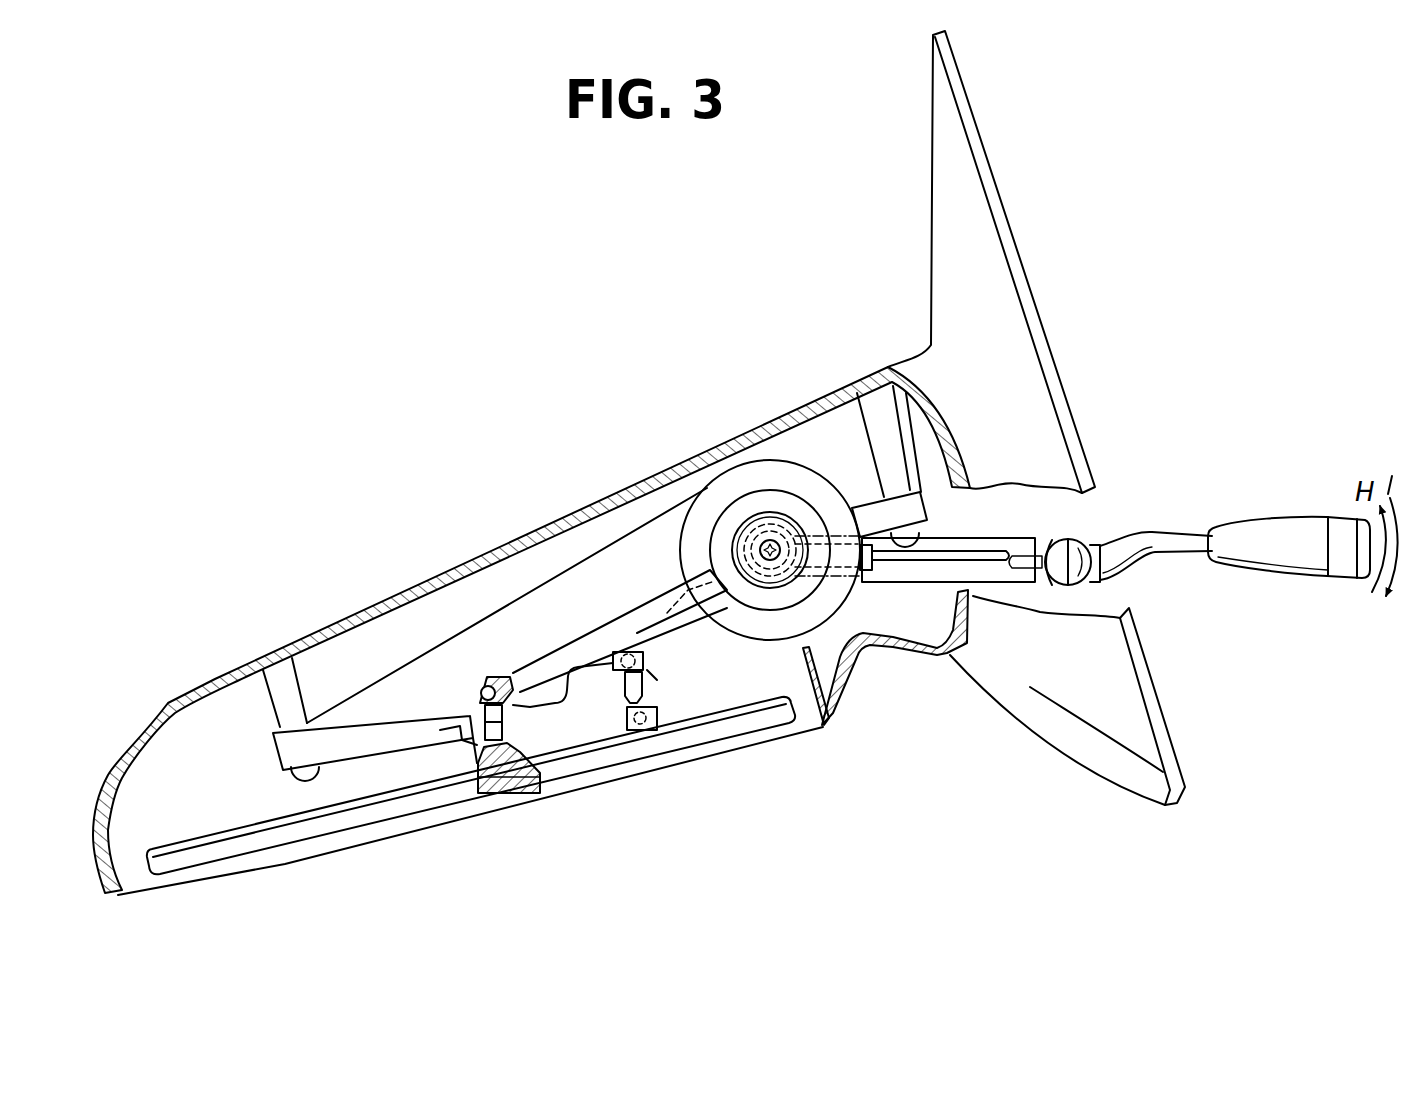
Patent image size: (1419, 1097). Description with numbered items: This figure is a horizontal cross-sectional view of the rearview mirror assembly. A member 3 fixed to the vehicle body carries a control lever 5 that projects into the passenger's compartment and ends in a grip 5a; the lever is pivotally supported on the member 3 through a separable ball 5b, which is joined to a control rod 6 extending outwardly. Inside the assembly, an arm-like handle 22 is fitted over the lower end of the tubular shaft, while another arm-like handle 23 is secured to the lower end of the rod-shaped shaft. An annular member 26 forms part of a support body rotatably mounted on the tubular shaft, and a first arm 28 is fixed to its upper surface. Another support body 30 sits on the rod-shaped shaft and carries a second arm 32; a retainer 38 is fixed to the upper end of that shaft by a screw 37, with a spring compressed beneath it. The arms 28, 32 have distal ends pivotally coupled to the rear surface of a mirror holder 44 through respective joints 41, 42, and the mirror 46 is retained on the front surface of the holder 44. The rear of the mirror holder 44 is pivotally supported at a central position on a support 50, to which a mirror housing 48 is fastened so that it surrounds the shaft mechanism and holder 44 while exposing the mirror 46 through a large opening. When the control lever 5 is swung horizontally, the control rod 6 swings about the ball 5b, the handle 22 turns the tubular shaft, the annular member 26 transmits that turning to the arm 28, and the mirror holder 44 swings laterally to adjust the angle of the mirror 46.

The member fixed to vehicle body 3 is at (1076, 428).
The control lever 5 is at (1183, 532).
The grip 5a is at (1277, 563).
The ball 5b is at (1075, 532).
The control rod 6 is at (983, 557).
The arm-like handle 22 is at (860, 640).
The arm-like handle 23 is at (923, 580).
The annular member 26 is at (757, 462).
The first arm 28 is at (690, 622).
The support body 30 is at (727, 506).
The second arm 32 is at (588, 633).
The screw 37 is at (772, 560).
The retainer 38 is at (779, 514).
The joint 41 is at (650, 705).
The joint 42 is at (475, 712).
The mirror holder 44 is at (610, 754).
The mirror 46 is at (521, 793).
The mirror housing 48 is at (452, 566).
The support 50 is at (387, 678).